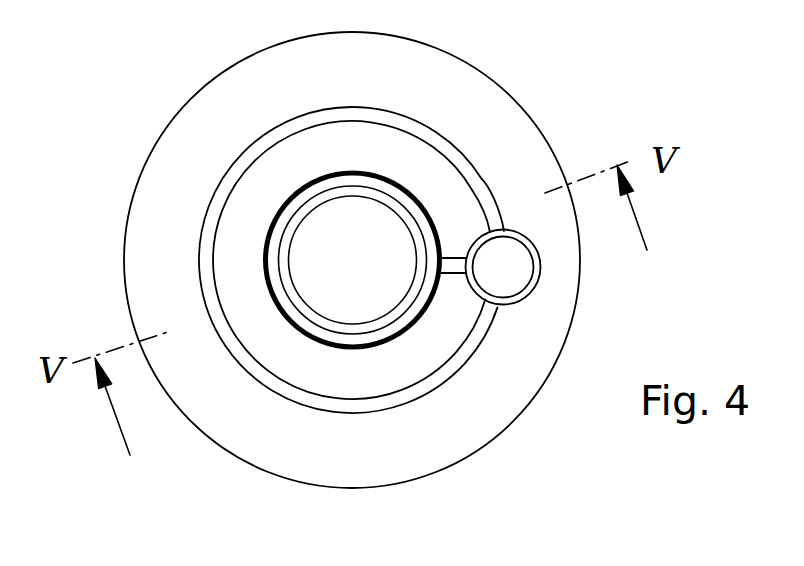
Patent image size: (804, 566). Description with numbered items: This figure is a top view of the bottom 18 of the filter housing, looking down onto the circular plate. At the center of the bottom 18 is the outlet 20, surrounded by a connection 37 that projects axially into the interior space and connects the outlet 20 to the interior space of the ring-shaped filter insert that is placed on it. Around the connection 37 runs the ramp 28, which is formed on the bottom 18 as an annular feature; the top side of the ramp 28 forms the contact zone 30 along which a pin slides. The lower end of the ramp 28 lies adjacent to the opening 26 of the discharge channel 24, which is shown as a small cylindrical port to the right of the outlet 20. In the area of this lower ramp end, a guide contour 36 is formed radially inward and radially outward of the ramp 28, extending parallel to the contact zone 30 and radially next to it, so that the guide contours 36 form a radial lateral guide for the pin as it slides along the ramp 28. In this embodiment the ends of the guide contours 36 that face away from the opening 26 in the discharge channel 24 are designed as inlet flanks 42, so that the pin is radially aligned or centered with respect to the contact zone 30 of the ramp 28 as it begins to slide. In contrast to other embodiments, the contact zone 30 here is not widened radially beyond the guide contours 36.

The bottom 18 is at (543, 339).
The outlet 20 is at (372, 277).
The discharge channel 24 is at (515, 258).
The opening 26 is at (510, 292).
The ramp 28 is at (341, 428).
The contact zone 30 is at (460, 373).
The guide contour 36 is at (473, 206).
The connection 37 is at (355, 190).
The inlet flank 42 is at (474, 172).